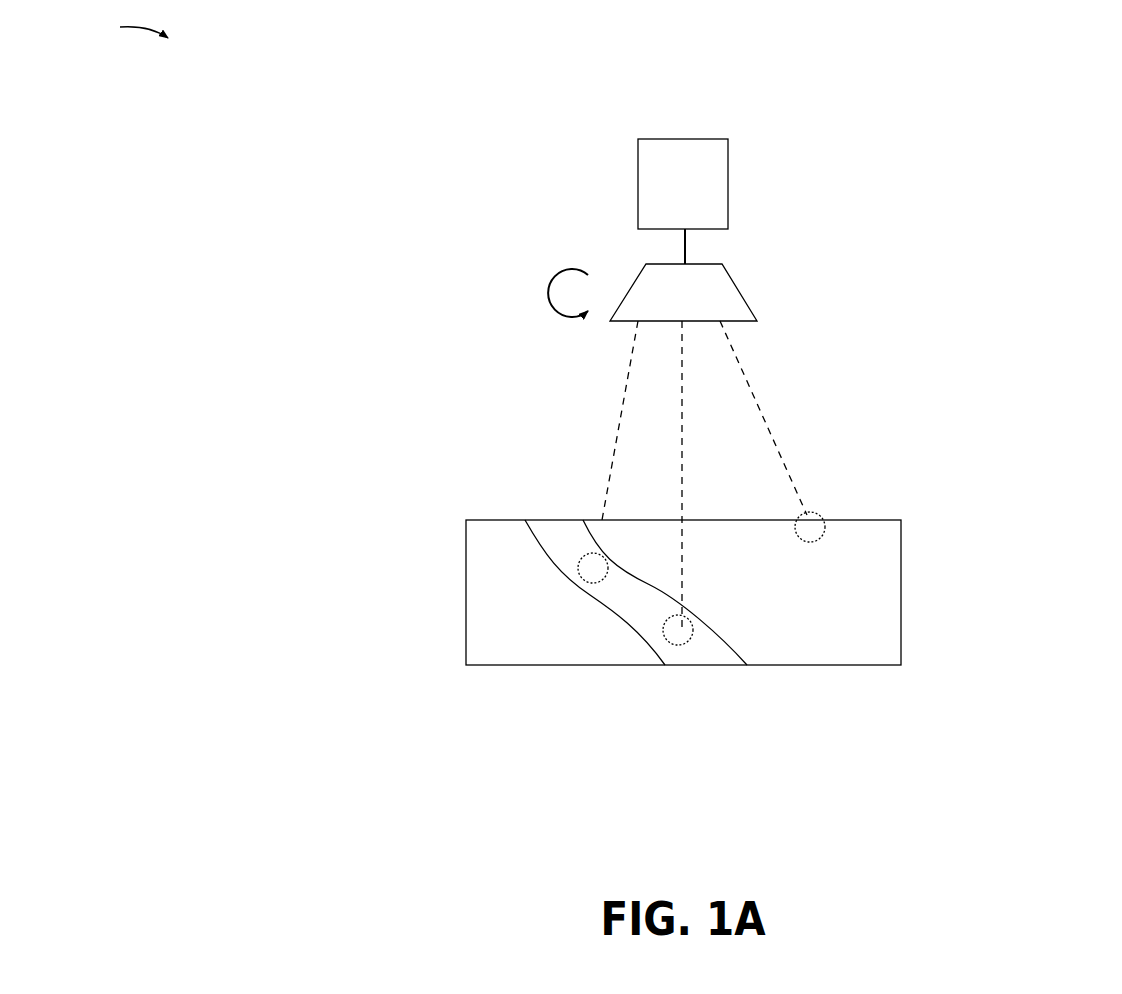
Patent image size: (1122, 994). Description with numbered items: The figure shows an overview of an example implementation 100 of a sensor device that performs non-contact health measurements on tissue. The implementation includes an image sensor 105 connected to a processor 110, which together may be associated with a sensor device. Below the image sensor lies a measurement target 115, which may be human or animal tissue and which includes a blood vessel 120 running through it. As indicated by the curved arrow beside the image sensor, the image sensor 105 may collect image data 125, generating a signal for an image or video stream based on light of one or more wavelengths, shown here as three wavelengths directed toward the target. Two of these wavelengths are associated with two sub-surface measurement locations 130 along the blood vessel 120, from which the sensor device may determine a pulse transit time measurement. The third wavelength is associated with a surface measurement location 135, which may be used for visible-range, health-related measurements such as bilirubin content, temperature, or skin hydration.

The example implementation 100 is at (117, 28).
The image sensor 105 is at (743, 295).
The processor 110 is at (638, 183).
The measurement target 115 is at (901, 607).
The blood vessel 120 is at (702, 658).
The collect image data 125 is at (501, 294).
The sub-surface measurement locations 130 is at (657, 630).
The surface measurement location 135 is at (820, 517).